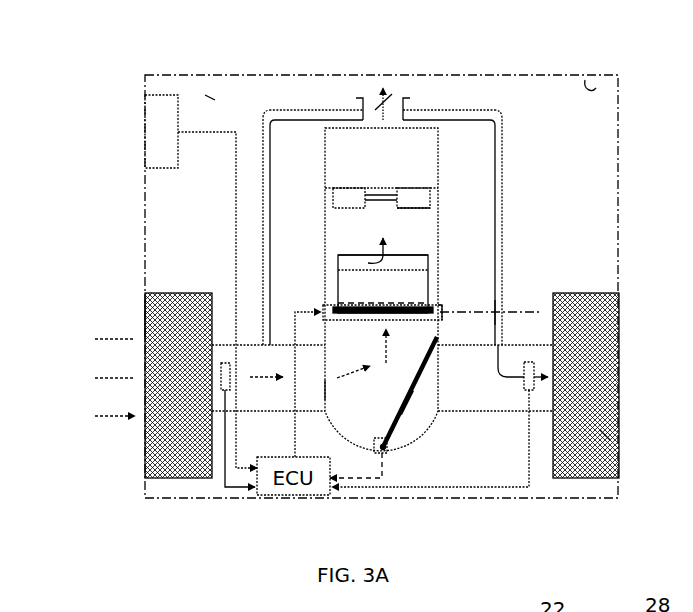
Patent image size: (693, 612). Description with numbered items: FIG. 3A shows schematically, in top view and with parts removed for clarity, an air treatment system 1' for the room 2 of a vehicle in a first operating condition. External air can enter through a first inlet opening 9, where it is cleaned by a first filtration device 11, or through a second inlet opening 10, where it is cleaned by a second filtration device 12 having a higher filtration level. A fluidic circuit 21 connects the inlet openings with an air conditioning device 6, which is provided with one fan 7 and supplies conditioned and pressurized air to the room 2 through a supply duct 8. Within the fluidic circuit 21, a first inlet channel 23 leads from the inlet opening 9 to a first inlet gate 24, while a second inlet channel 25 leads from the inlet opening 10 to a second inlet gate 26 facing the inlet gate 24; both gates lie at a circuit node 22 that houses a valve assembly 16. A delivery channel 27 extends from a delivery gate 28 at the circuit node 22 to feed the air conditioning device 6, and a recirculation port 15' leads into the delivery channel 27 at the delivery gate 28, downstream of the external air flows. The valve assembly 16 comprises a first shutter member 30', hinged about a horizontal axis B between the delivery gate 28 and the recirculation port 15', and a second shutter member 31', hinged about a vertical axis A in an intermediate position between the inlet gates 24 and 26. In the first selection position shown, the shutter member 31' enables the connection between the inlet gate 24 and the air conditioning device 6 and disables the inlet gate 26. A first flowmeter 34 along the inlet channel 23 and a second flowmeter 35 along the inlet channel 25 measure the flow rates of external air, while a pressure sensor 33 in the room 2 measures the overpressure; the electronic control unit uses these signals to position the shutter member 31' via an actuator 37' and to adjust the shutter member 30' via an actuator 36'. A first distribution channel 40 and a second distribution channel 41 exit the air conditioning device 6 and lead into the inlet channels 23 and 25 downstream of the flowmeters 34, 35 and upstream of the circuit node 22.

The air treatment system 1' is at (361, 258).
The room 2 is at (596, 88).
The fluidic circuit 21 is at (212, 98).
The pressure sensor 33 is at (155, 120).
The first distribution channel 40 is at (293, 108).
The second distribution channel 41 is at (462, 108).
The supply duct 8 is at (398, 103).
The air conditioning device 6 is at (323, 168).
The fan 7 is at (418, 187).
The delivery channel 27 is at (434, 213).
The first shutter member 30' is at (383, 264).
The recirculation port 15' is at (411, 237).
The valve assembly 16 is at (335, 293).
The delivery gate 28 is at (322, 300).
The circuit node 22 is at (438, 293).
The actuator 36' is at (519, 288).
The horizontal axis B is at (508, 312).
The first inlet channel 23 is at (272, 407).
The first inlet gate 24 is at (326, 387).
The second inlet channel 25 is at (480, 403).
The second inlet gate 26 is at (445, 372).
The second shutter member 31' is at (439, 412).
The actuator 37' is at (398, 458).
The vertical axis A is at (390, 460).
The first flowmeter 34 is at (225, 362).
The second flowmeter 35 is at (528, 362).
The first filtration device 11 is at (148, 455).
The first inlet opening 9 is at (143, 318).
The second inlet opening 10 is at (626, 323).
The second filtration device 12 is at (604, 443).